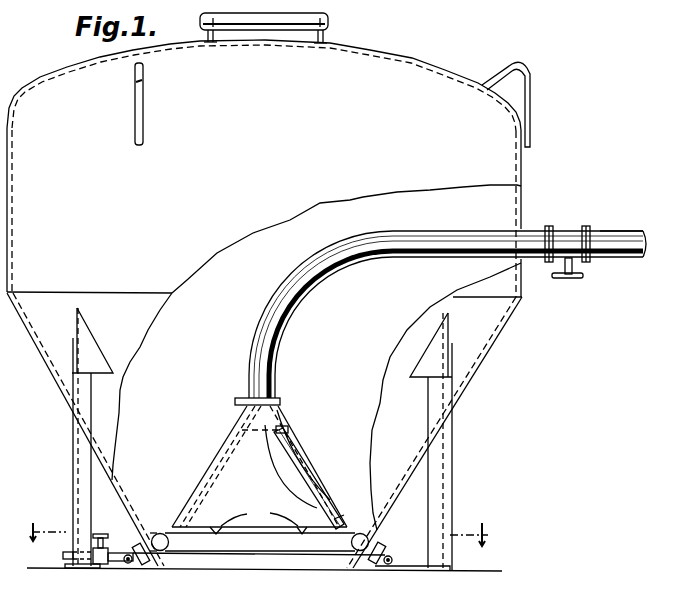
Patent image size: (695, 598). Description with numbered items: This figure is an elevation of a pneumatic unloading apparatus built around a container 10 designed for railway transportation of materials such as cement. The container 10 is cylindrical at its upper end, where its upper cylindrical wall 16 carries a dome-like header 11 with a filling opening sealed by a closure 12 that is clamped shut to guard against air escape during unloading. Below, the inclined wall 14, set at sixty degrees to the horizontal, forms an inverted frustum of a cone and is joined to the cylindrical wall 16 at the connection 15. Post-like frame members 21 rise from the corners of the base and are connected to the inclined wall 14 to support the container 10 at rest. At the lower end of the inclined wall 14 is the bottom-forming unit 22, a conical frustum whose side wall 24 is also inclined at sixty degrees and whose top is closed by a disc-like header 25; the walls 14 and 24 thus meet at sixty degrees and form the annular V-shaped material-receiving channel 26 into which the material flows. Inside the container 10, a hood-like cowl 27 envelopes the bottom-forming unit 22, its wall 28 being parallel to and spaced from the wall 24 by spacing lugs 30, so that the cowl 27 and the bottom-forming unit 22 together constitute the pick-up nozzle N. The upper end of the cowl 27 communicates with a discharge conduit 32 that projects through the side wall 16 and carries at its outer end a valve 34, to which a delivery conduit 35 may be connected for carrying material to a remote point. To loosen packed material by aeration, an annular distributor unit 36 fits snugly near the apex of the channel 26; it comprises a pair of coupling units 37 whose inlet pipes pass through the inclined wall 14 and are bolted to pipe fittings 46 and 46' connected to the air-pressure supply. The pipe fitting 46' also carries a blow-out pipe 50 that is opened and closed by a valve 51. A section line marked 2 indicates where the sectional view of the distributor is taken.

The container 10 is at (280, 155).
The dome-like header 11 is at (404, 59).
The closure 12 is at (328, 19).
The inclined wall 14 is at (463, 401).
The connection 15 is at (522, 297).
The upper cylindrical wall 16 is at (521, 205).
The post-like frame members 21 is at (80, 481).
The bottom-forming unit 22 is at (297, 450).
The side wall 24 is at (313, 470).
The disc-like header 25 is at (282, 424).
The V-shaped material-receiving channel 26 is at (357, 562).
The hood-like cowl 27 is at (223, 476).
The cowl wall 28 is at (333, 512).
The spacing lugs 30 is at (258, 518).
The discharge conduit 32 is at (404, 258).
The valve 34 is at (565, 240).
The delivery conduit 35 is at (618, 236).
The annular distributor unit 36 is at (195, 560).
The coupling units 37 is at (138, 550).
The pipe fitting 46 is at (402, 555).
The pipe fitting 46' is at (123, 574).
The blow-out pipe 50 is at (65, 556).
The valve 51 is at (104, 540).
The pick-up nozzle N is at (220, 441).
The section line 2- 2 is at (260, 534).